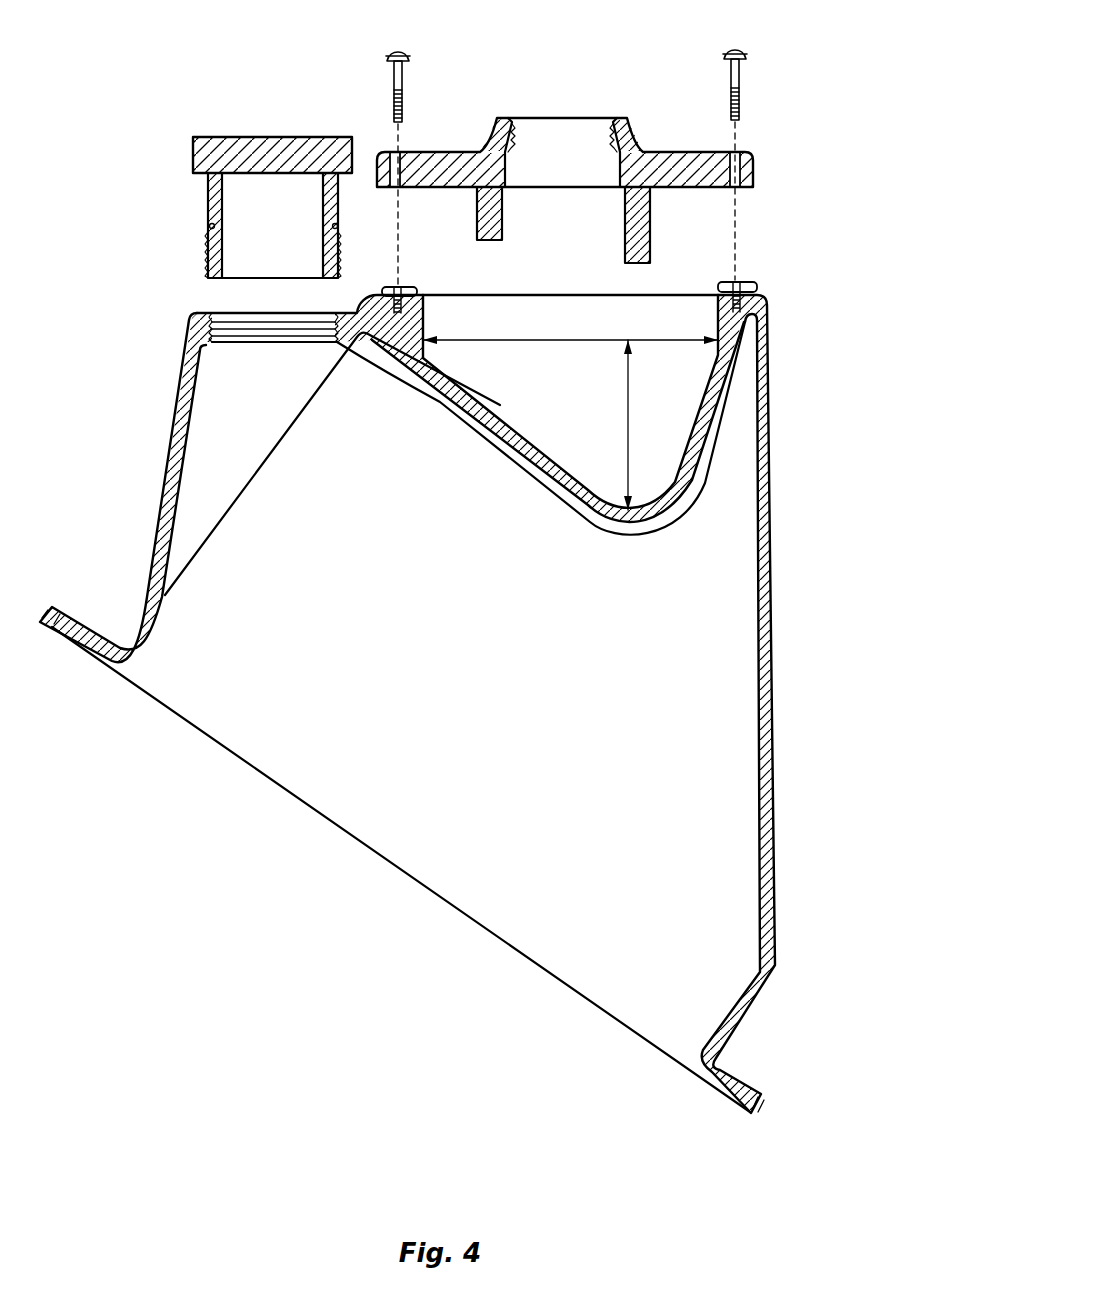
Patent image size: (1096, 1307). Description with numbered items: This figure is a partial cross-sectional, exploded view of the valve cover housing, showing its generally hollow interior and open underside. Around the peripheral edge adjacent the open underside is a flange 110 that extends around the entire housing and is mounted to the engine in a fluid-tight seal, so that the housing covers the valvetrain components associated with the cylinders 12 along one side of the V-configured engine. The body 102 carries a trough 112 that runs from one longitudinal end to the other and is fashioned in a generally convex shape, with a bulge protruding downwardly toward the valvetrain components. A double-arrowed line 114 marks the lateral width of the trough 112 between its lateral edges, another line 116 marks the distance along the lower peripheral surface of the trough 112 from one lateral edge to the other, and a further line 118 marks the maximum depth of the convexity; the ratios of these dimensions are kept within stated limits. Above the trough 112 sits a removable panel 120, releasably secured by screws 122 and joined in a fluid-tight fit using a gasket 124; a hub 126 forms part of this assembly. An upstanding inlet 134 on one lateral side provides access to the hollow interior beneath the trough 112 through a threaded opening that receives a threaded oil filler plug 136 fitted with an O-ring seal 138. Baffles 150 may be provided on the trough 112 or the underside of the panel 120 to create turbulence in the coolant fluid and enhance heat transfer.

The cylinders 12 is at (582, 388).
The container body 102 is at (272, 465).
The flange 110 is at (70, 620).
The trough 112 is at (492, 408).
The lateral width of the trough 114 is at (538, 340).
The lower peripheral surface distance 116 is at (520, 478).
The maximum depth of the convexity 118 is at (628, 412).
The panel 120 is at (682, 152).
The screws 122 is at (388, 52).
The gasket 124 is at (760, 286).
The threaded hub 126 is at (500, 118).
The inlet 134 is at (185, 348).
The oil filler plug 136 is at (262, 135).
The O-ring seal 138 is at (208, 215).
The baffles 150 is at (503, 228).